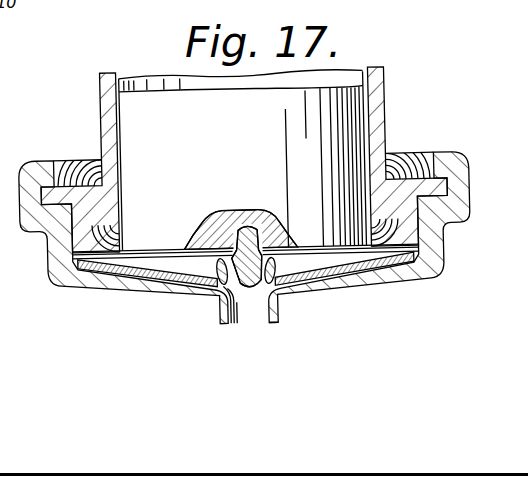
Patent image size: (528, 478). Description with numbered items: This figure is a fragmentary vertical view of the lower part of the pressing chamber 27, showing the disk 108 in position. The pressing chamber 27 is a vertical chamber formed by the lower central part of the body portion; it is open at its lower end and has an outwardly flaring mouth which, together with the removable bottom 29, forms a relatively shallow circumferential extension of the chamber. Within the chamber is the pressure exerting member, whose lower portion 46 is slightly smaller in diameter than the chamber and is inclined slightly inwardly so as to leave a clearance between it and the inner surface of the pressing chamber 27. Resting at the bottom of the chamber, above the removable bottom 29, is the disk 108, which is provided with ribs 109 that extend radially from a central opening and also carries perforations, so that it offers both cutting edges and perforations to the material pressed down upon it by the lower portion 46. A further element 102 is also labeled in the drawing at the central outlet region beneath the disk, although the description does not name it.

The pressing chamber 27 is at (359, 79).
The lower portion 46 is at (153, 124).
The removable bottom 29 is at (380, 281).
The disk 108 is at (147, 293).
The ribs 109 is at (188, 292).
The outlet spout 102 is at (250, 318).